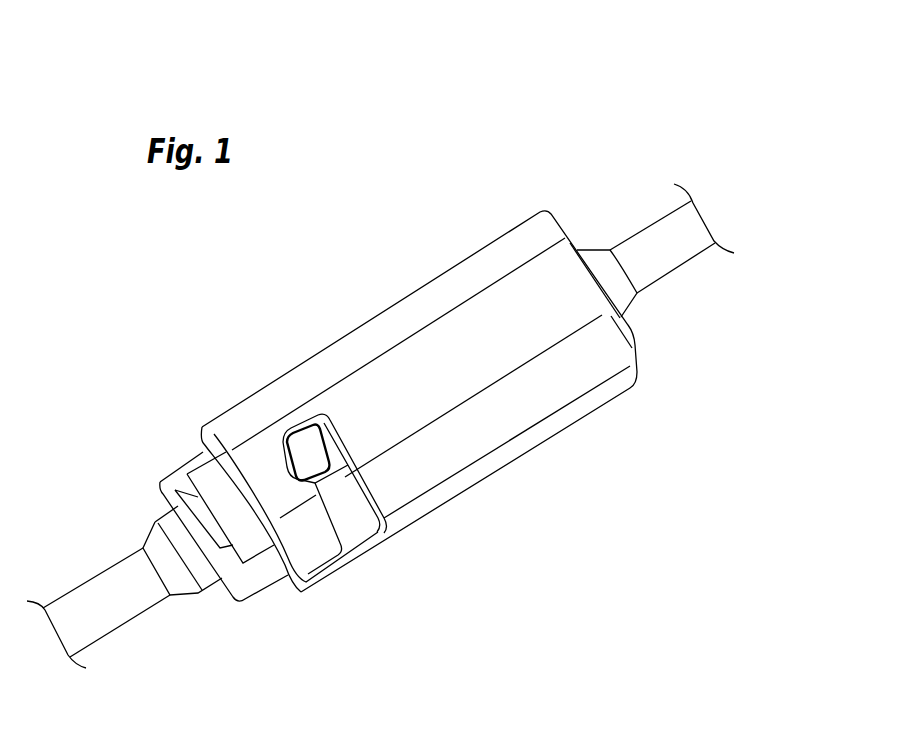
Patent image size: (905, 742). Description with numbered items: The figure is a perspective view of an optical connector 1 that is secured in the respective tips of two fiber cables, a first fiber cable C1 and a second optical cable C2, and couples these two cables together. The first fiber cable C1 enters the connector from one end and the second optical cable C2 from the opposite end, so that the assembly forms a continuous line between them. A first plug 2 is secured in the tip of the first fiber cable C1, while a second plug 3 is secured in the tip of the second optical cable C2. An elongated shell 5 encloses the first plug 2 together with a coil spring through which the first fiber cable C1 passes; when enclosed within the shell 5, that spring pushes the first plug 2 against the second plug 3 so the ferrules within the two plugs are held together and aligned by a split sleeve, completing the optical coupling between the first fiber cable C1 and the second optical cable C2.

The optical connector 1 is at (526, 84).
The first plug 2 is at (338, 453).
The second plug 3 is at (268, 570).
The shell 5 is at (383, 302).
The first fiber cable C1 is at (672, 253).
The second optical cable C2 is at (127, 600).